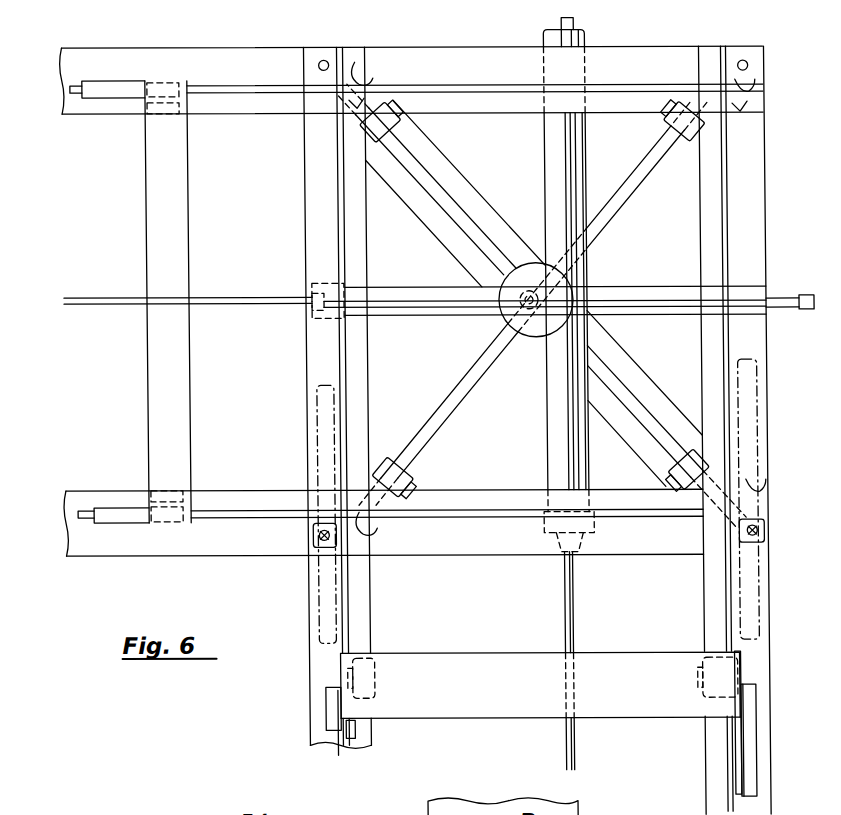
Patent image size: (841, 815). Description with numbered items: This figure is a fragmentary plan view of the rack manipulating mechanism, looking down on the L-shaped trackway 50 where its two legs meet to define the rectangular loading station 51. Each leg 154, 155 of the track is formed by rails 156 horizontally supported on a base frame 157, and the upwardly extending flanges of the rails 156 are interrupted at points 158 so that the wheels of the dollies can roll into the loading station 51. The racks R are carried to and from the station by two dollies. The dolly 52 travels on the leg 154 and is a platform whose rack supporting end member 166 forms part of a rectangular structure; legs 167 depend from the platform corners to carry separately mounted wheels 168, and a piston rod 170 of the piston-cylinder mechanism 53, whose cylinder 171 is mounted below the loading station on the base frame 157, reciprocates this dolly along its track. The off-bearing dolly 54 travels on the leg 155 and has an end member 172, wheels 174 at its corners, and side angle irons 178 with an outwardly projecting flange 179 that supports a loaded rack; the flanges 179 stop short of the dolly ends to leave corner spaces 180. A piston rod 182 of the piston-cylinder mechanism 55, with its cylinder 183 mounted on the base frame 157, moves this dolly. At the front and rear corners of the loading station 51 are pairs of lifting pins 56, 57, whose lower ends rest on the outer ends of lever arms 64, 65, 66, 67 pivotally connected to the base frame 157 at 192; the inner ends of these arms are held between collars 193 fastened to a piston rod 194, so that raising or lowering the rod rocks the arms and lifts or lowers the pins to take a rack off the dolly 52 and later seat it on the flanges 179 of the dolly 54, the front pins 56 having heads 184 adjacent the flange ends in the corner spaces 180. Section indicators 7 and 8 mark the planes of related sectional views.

The L-shaped trackway 50 is at (297, 562).
The loading station 51 is at (643, 154).
The dolly 52 is at (193, 372).
The piston-cylinder mechanism 53 is at (672, 285).
The off-bearing dolly 54 is at (498, 651).
The piston-cylinder mechanism 55 is at (545, 212).
The front lifting pins 56 is at (312, 537).
The rear lifting pins 57 is at (328, 58).
The lever arm 64 is at (453, 382).
The lever arm 65 is at (633, 390).
The lever arm 66 is at (440, 182).
The lever arm 67 is at (632, 216).
The leg of the track 154 is at (110, 62).
The leg of the track 155 is at (318, 706).
The rails 156 is at (237, 95).
The base frame 157 is at (196, 56).
The interruption points 158 is at (368, 72).
The rack supporting end member 166 is at (196, 228).
The legs 167 is at (175, 82).
The wheels 168 is at (142, 103).
The piston rod 170 is at (235, 297).
The cylinder 171 is at (790, 296).
The end member 172 is at (510, 653).
The wheels 174 is at (358, 662).
The side angle irons 178 is at (336, 738).
The outwardly projecting flange 179 is at (330, 720).
The corner spaces 180 is at (323, 682).
The piston rod 182 is at (585, 612).
The cylinder 183 is at (587, 37).
The head 184 is at (327, 550).
The pivotal connection 192 is at (375, 136).
The collars 193 is at (518, 333).
The piston rod 194 is at (503, 316).
The rack R is at (305, 440).
The section line 7- 7 is at (675, 776).
The section line 8- 8 is at (380, 112).